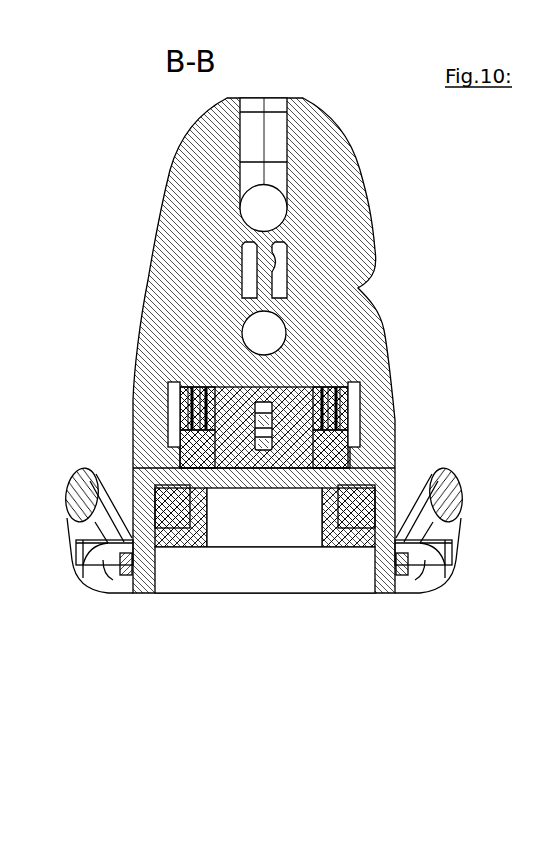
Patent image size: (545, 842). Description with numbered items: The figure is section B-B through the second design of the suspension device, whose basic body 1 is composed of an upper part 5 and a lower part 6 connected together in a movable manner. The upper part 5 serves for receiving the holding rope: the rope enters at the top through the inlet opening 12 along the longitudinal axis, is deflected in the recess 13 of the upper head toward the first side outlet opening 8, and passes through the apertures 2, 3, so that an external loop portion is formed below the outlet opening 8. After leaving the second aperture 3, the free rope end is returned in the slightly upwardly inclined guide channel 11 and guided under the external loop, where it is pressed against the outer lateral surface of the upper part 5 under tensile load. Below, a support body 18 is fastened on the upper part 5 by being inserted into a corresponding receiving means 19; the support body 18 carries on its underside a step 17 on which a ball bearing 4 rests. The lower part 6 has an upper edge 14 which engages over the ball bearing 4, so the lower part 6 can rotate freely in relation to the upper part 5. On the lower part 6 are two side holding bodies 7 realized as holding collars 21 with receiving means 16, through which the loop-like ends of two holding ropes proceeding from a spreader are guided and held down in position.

The basic body 1 is at (433, 258).
The aperture 2 is at (293, 216).
The second aperture 3 is at (292, 327).
The ball bearing 4 is at (165, 502).
The upper part 5 is at (373, 340).
The lower part 6 is at (395, 470).
The holding body 7 is at (208, 573).
The first side outlet opening 8 is at (275, 210).
The guide channel 11 is at (363, 287).
The inlet opening 12 is at (267, 93).
The recess 13 is at (282, 158).
The upper edge 14 is at (163, 477).
The receiving means 16 is at (417, 532).
The step 17 is at (182, 550).
The support body 18 is at (287, 425).
The receiving means 19 is at (167, 391).
The holding collar 21 is at (452, 493).